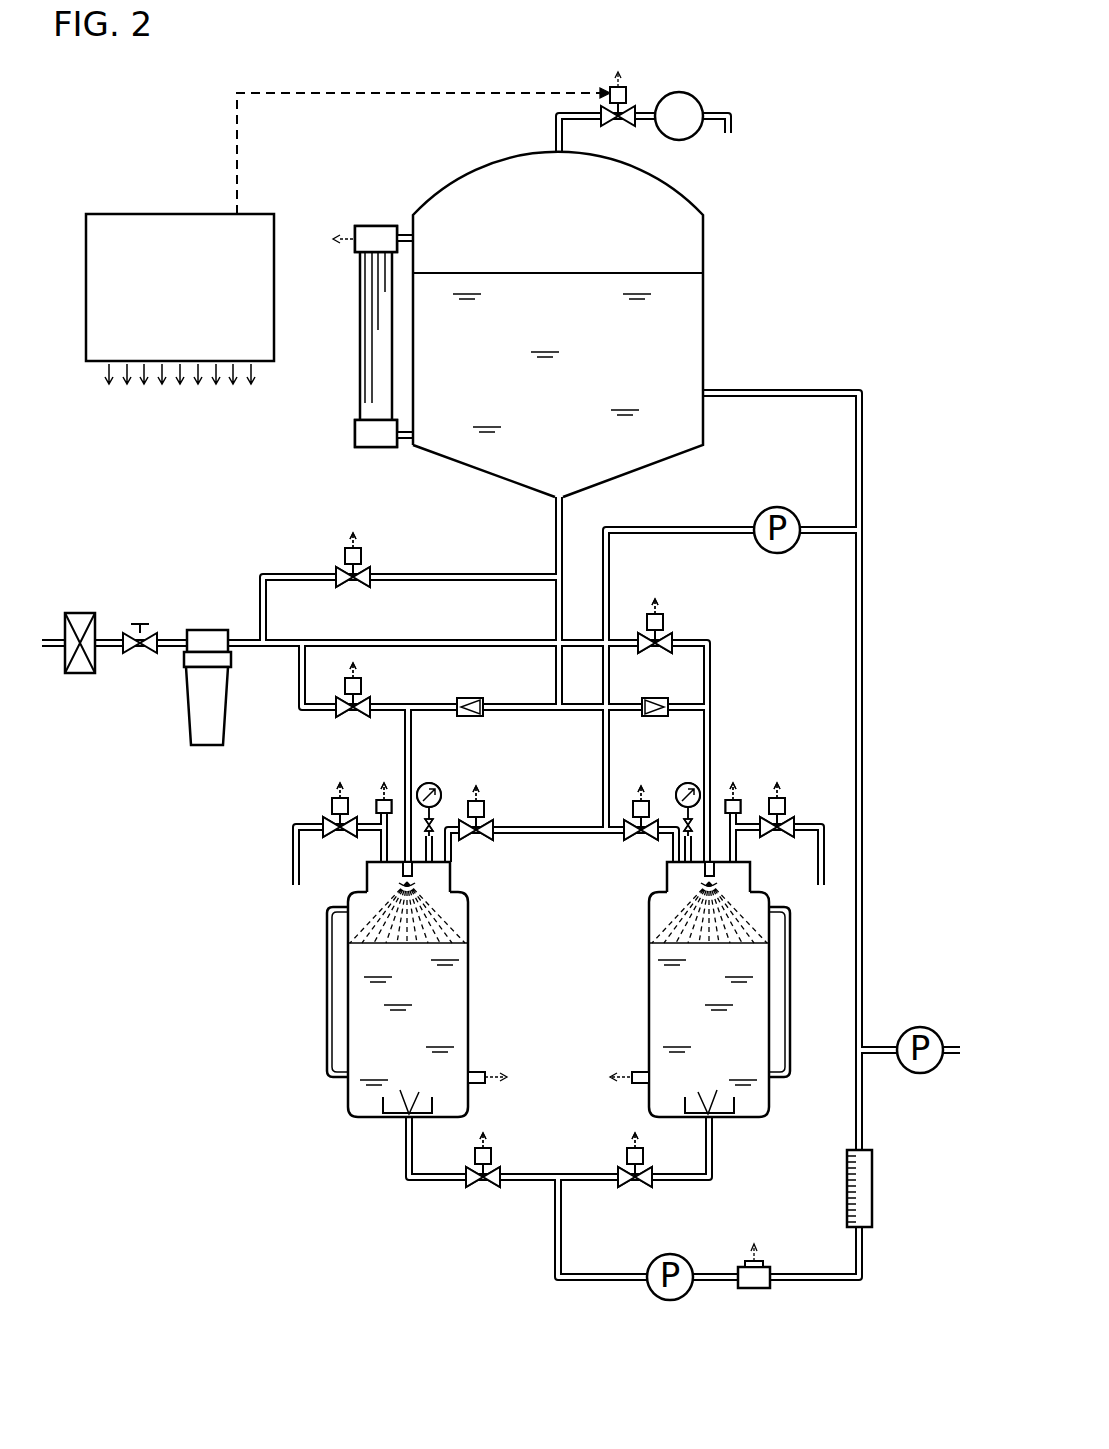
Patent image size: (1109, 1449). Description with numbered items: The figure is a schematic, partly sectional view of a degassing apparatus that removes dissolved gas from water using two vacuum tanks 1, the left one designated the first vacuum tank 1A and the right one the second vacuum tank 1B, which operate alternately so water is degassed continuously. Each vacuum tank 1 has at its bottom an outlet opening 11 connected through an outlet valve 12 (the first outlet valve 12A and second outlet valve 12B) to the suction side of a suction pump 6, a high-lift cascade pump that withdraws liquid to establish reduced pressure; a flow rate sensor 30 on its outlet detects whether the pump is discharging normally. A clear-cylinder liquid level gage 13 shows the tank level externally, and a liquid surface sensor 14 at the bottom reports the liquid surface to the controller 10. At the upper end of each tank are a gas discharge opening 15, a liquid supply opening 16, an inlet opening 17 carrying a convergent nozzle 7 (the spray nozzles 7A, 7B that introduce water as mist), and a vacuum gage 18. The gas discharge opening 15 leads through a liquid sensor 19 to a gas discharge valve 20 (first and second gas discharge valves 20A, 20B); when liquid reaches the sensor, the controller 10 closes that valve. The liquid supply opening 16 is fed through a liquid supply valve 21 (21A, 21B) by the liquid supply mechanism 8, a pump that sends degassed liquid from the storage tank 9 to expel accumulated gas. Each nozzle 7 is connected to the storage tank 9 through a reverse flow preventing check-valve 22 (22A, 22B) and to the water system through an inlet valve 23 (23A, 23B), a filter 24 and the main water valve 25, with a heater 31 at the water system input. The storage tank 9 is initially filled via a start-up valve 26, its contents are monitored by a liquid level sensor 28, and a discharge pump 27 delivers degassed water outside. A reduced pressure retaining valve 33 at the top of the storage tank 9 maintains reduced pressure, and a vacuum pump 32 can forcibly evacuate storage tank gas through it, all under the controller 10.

The vacuum tank 1 is at (531, 1085).
The first vacuum tank 1A is at (341, 1085).
The second vacuum tank 1B is at (748, 1077).
The suction pump 6 is at (660, 1297).
The convergent nozzle 7 is at (829, 1018).
The convergent nozzle 7A is at (372, 944).
The convergent nozzle 7B is at (740, 946).
The liquid supply mechanism 8 is at (780, 506).
The storage tank 9 is at (703, 318).
The controller 10 is at (149, 213).
The outlet opening 11 is at (412, 1098).
The outlet valve 12 is at (569, 1226).
The first outlet valve 12A is at (487, 1190).
The second outlet valve 12B is at (636, 1190).
The liquid level gage 13 is at (327, 1000).
The liquid surface sensor 14 is at (480, 1085).
The gas discharge opening 15 is at (367, 868).
The liquid supply opening 16 is at (412, 884).
The inlet opening 17 is at (410, 860).
The vacuum gage 18 is at (433, 783).
The liquid sensor 19 is at (382, 800).
The gas discharge valve 20 is at (530, 778).
The first gas discharge valve 20A is at (323, 826).
The second gas discharge valve 20B is at (830, 785).
The liquid supply valve 21 is at (562, 808).
The first liquid supply valve 21A is at (495, 814).
The second liquid supply valve 21B is at (640, 845).
The check-valve 22 is at (627, 655).
The first check-valve 22A is at (470, 697).
The second check-valve 22B is at (668, 700).
The inlet valve 23 is at (516, 678).
The first inlet valve 23A is at (345, 716).
The second inlet valve 23B is at (665, 636).
The filter 24 is at (207, 629).
The main water valve 25 is at (140, 655).
The start-up valve 26 is at (362, 574).
The discharge pump 27 is at (920, 1028).
The liquid level sensor 28 is at (359, 368).
The flow rate sensor 30 is at (760, 1290).
The heater 31 is at (80, 612).
The vacuum pump 32 is at (700, 98).
The reduced pressure retaining valve 33 is at (628, 108).